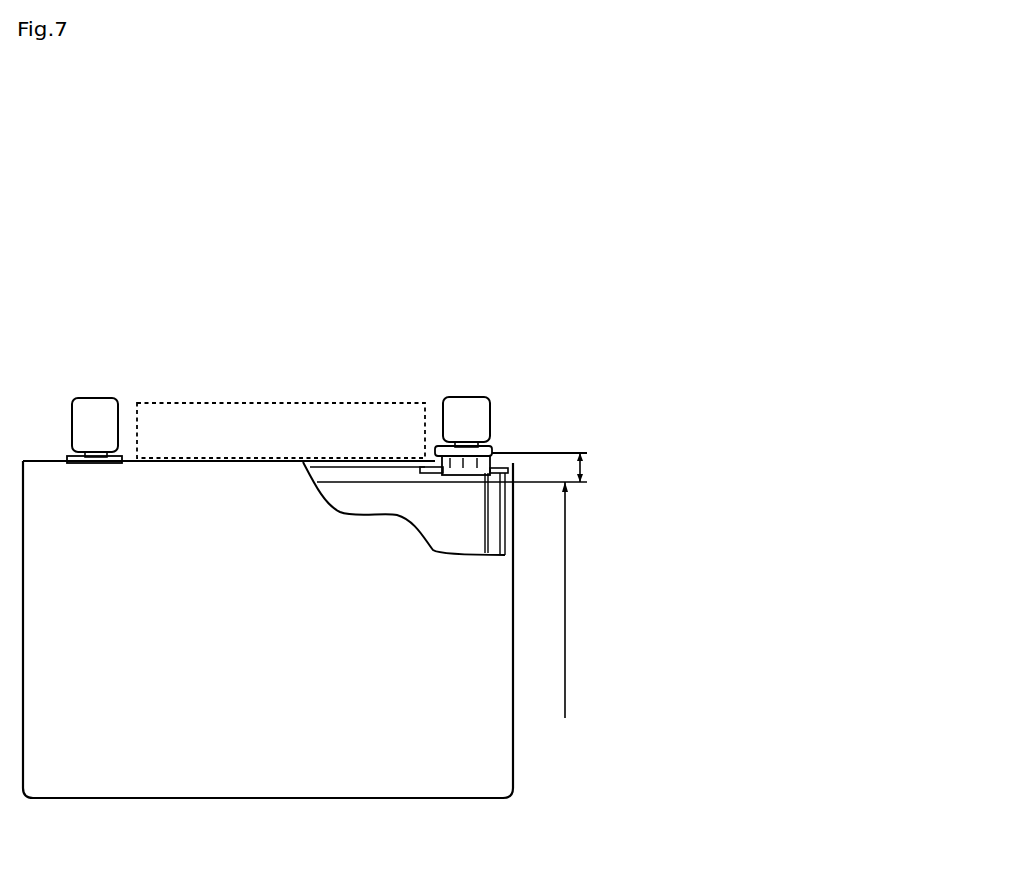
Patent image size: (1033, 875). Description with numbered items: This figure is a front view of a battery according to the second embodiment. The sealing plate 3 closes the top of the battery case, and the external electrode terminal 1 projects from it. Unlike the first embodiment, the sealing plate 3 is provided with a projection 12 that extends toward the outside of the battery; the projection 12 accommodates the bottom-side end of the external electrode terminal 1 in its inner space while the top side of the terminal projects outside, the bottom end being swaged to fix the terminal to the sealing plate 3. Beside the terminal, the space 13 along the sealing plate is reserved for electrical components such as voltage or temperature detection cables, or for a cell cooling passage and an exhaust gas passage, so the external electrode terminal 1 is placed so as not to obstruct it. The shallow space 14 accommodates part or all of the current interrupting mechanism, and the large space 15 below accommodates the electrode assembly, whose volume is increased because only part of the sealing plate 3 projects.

The external electrode terminal 1 is at (466, 405).
The sealing plate 3 is at (340, 463).
The projection 12 is at (500, 466).
The space for electrical components and gas passages 13 is at (228, 415).
The space for the current interrupting mechanism 14 is at (598, 464).
The space for the electrode assembly 15 is at (729, 622).